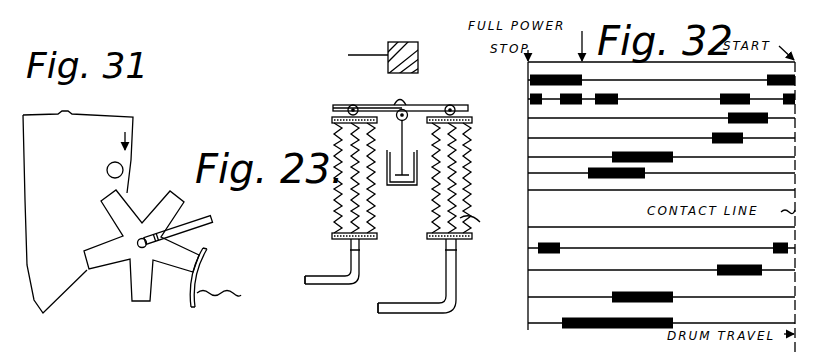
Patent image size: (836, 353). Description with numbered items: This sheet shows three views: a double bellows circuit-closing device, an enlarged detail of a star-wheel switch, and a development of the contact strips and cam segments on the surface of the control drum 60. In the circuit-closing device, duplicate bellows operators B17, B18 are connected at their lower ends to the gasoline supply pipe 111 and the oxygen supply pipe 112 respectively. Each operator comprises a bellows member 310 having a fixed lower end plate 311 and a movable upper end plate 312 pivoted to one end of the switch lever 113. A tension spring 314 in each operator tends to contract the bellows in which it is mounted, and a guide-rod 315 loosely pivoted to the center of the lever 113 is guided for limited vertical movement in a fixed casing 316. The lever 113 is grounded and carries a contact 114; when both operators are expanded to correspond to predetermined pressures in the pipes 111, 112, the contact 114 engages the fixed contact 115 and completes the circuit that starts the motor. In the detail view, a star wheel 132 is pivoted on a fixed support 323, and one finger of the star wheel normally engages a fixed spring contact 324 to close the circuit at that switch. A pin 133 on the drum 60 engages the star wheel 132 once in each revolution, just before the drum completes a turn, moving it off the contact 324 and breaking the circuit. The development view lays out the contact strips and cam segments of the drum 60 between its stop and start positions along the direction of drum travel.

In FIG. 31, the control drum 60 is at (85, 125).
In FIG. 31, the pin 133 is at (107, 171).
In FIG. 31, the star wheel 132 is at (117, 210).
In FIG. 31, the fixed support 323 is at (213, 222).
In FIG. 31, the fixed spring contact 324 is at (199, 273).
In FIG. 23, the fixed contact 115 is at (403, 74).
In FIG. 23, the contact 114 is at (367, 98).
In FIG. 23, the switch lever 113 is at (400, 104).
In FIG. 23, the movable upper end plate 312 is at (473, 118).
In FIG. 23, the bellows member 310 is at (333, 135).
In FIG. 23, the tension spring 314 is at (352, 200).
In FIG. 23, the guide-rod 315 is at (413, 147).
In FIG. 23, the fixed casing 316 is at (402, 181).
In FIG. 23, the fixed lower end plate 311 is at (447, 243).
In FIG. 23, the gasoline supply pipe 111 is at (312, 289).
In FIG. 23, the oxygen supply pipe 112 is at (400, 318).
In FIG. 23, the bellows operator B17 is at (312, 233).
In FIG. 23, the bellows operator B18 is at (489, 220).